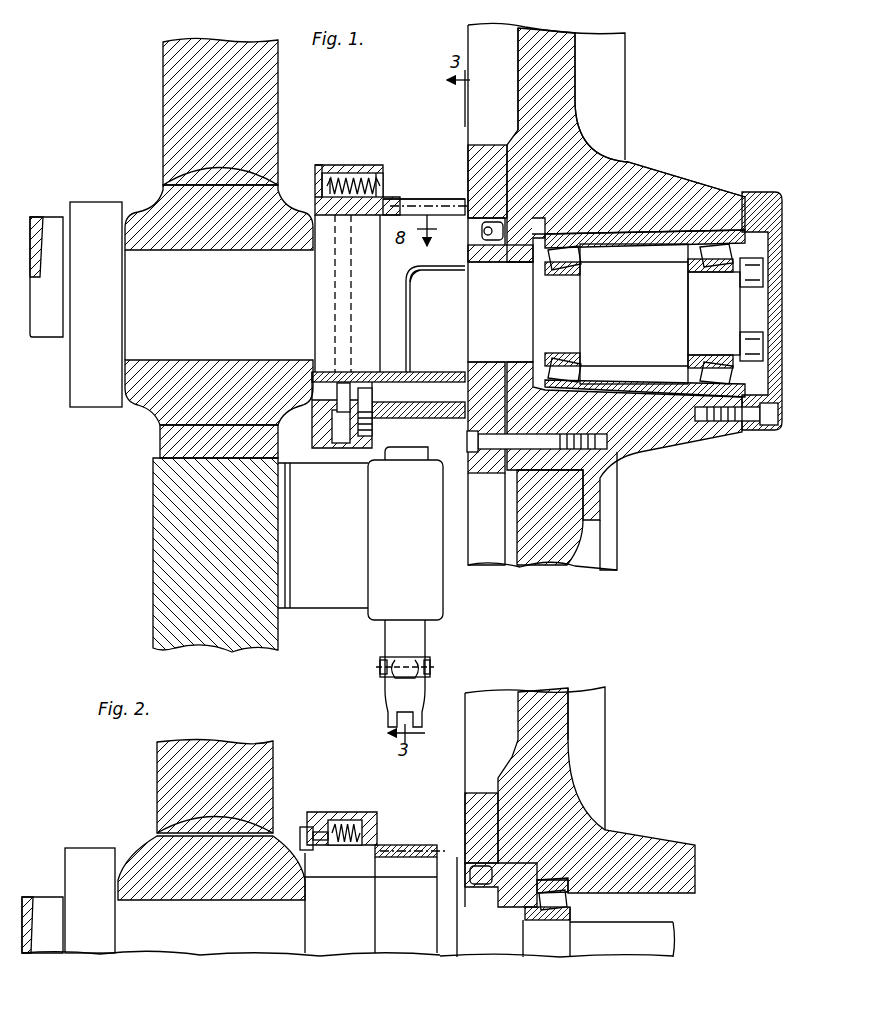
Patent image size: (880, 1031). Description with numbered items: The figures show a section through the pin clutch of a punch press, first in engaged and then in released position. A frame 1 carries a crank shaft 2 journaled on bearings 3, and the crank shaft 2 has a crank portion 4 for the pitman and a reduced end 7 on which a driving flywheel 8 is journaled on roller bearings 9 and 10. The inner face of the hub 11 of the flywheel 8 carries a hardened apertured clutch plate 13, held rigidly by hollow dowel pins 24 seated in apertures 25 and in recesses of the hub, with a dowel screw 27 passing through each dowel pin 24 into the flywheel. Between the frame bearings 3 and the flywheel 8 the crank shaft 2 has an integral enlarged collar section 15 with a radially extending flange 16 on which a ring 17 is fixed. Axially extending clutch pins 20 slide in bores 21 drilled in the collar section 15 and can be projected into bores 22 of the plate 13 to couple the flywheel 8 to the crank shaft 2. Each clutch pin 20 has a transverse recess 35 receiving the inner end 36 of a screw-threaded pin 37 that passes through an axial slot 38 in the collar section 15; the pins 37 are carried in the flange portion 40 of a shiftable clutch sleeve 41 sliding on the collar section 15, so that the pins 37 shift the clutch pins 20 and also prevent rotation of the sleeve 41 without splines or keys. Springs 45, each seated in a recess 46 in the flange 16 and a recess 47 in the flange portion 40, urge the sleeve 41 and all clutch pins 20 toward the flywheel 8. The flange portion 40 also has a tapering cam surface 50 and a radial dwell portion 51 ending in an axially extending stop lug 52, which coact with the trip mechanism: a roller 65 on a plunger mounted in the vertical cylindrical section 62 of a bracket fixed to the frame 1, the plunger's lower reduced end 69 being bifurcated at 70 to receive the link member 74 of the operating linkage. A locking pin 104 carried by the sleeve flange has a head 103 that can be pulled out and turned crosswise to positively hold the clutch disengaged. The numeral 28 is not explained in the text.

In FIG. 1, the frame 1 is at (150, 527).
In FIG. 2, the frame 1 is at (152, 791).
In FIG. 1, the crank shaft 2 is at (62, 390).
In FIG. 2, the crank shaft 2 is at (207, 963).
In FIG. 1, the bearings 3 is at (216, 250).
In FIG. 2, the bearings 3 is at (250, 890).
In FIG. 1, the crank portion 4 is at (50, 232).
In FIG. 2, the crank portion 4 is at (46, 905).
In FIG. 1, the reduced end 7 is at (652, 218).
In FIG. 1, the driving flywheel 8 is at (632, 95).
In FIG. 2, the driving flywheel 8 is at (645, 775).
In FIG. 1, the roller bearing 9 is at (612, 242).
In FIG. 2, the roller bearing 9 is at (600, 917).
In FIG. 1, the roller bearing 10 is at (702, 256).
In FIG. 1, the hub 11 is at (630, 180).
In FIG. 1, the clutch plate 13 is at (482, 165).
In FIG. 2, the clutch plate 13 is at (480, 800).
In FIG. 1, the collar section 15 is at (470, 342).
In FIG. 2, the collar section 15 is at (440, 960).
In FIG. 1, the flange 16 is at (313, 258).
In FIG. 2, the flange 16 is at (381, 905).
In FIG. 1, the ring 17 is at (355, 170).
In FIG. 2, the ring 17 is at (355, 816).
In FIG. 1, the clutch pins 20 is at (508, 204).
In FIG. 2, the clutch pins 20 is at (508, 842).
In FIG. 1, the bores 21 is at (440, 374).
In FIG. 1, the bores 22 is at (533, 216).
In FIG. 2, the bores 22 is at (518, 862).
In FIG. 1, the dowel pins 24 is at (522, 490).
In FIG. 1, the apertures 25 is at (518, 452).
In FIG. 1, the dowel screw 27 is at (616, 472).
In FIG. 1, the bolt 28 is at (600, 455).
In FIG. 1, the transverse recess 35 is at (342, 384).
In FIG. 1, the inner end 36 is at (366, 390).
In FIG. 1, the screw-threaded pin 37 is at (355, 446).
In FIG. 1, the slot 38 is at (316, 405).
In FIG. 1, the flange portion 40 is at (397, 178).
In FIG. 2, the flange portion 40 is at (368, 833).
In FIG. 1, the clutch sleeve 41 is at (415, 205).
In FIG. 2, the clutch sleeve 41 is at (405, 850).
In FIG. 1, the springs 45 is at (354, 178).
In FIG. 1, the recess 46 is at (320, 180).
In FIG. 1, the recess 47 is at (374, 176).
In FIG. 1, the cam surface 50 is at (413, 365).
In FIG. 1, the dwell portion 51 is at (414, 302).
In FIG. 1, the stop lug 52 is at (440, 246).
In FIG. 1, the cylindrical section 62 is at (368, 570).
In FIG. 1, the roller 65 is at (420, 458).
In FIG. 1, the lower reduced end 69 is at (380, 665).
In FIG. 1, the bifurcation 70 is at (388, 683).
In FIG. 1, the link member 74 is at (398, 705).
In FIG. 2, the head 103 is at (305, 830).
In FIG. 2, the locking pin 104 is at (320, 832).